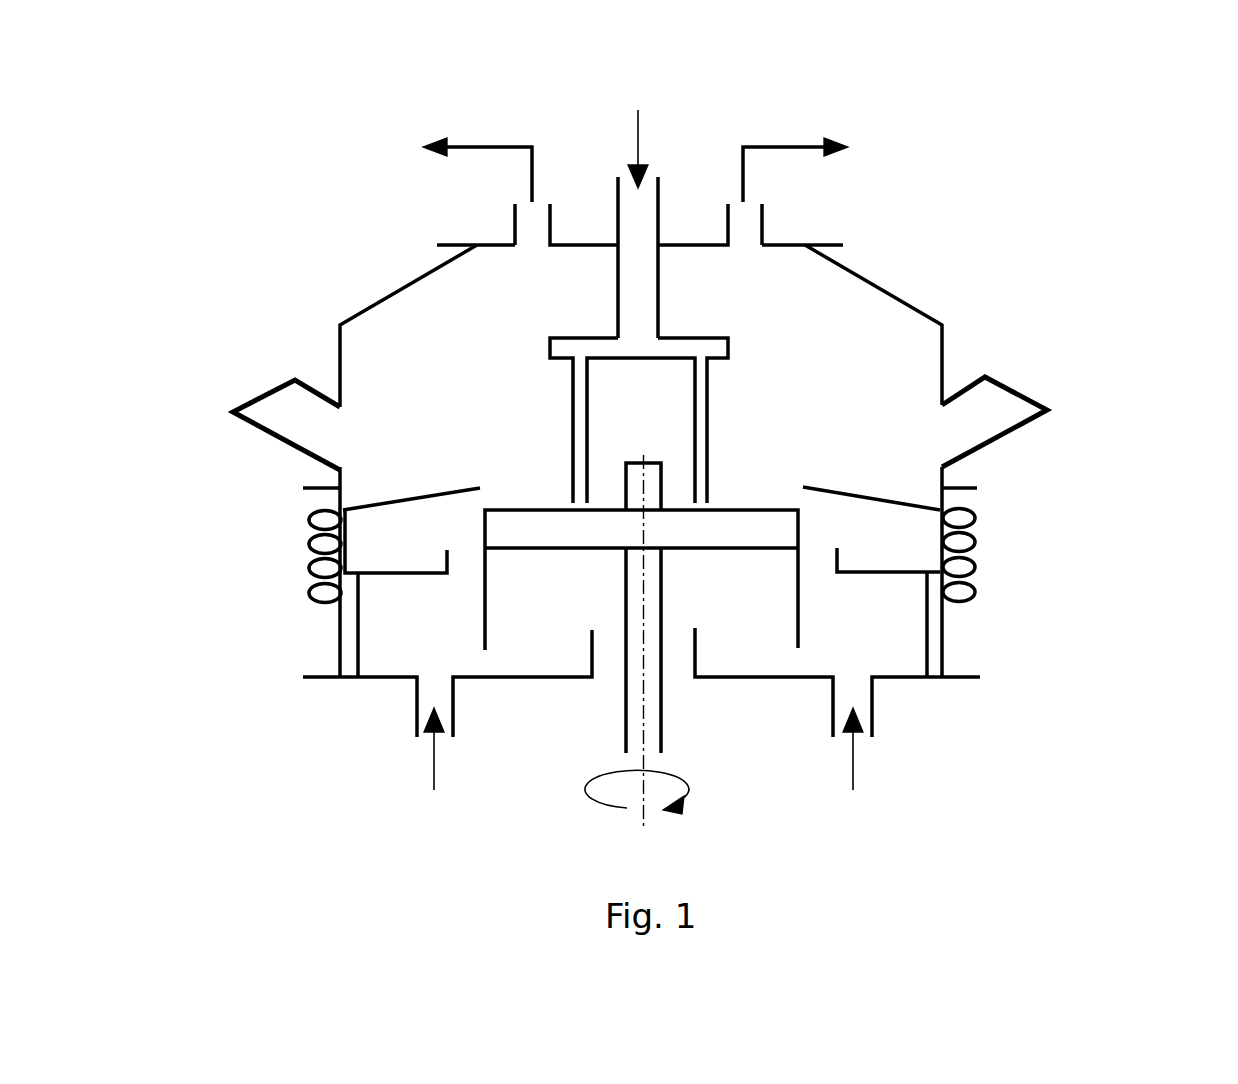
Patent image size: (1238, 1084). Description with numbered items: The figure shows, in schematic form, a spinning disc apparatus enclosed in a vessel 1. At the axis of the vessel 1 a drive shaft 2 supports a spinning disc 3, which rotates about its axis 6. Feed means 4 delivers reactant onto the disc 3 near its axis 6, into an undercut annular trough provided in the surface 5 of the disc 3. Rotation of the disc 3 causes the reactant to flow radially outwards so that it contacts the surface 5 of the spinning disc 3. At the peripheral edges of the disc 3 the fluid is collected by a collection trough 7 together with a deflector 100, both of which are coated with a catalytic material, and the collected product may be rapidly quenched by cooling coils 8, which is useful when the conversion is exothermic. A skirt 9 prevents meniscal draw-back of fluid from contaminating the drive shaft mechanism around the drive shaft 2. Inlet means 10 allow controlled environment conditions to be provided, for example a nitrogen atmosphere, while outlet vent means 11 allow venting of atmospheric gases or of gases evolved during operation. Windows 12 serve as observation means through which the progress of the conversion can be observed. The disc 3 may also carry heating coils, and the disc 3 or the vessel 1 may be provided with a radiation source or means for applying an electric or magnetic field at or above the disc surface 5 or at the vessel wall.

The vessel 1 is at (383, 297).
The drive shaft 2 is at (630, 487).
The spinning disc 3 is at (725, 528).
The feed means 4 is at (655, 313).
The surface 5 is at (573, 507).
The axis 6 is at (645, 808).
The collection trough 7 is at (887, 572).
The cooling coils 8 is at (977, 542).
The skirt 9 is at (482, 607).
The inlet means 10 is at (453, 715).
The outlet vent means 11 is at (550, 213).
The windows 12 is at (250, 400).
The deflector 100 is at (827, 493).